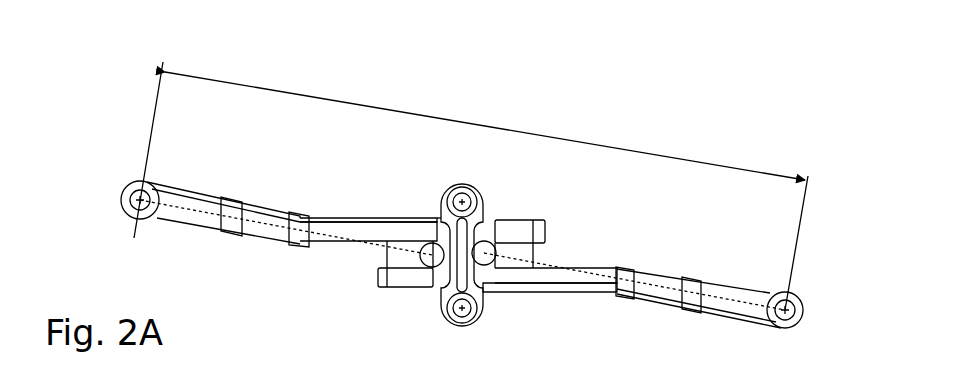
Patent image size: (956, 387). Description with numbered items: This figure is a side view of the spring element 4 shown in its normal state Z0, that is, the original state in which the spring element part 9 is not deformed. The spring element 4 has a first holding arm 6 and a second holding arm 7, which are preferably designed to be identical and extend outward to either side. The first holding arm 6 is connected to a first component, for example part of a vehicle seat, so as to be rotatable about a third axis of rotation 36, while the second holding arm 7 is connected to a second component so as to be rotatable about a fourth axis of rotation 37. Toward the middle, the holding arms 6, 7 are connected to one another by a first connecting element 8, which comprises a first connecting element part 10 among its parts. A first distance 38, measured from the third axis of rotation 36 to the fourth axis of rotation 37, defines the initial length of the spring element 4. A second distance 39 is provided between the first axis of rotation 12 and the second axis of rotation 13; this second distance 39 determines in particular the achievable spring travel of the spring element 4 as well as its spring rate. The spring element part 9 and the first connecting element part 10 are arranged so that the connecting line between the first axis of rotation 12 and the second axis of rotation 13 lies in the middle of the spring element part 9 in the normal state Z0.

The spring element 4 is at (818, 150).
The normal state Z0 is at (551, 75).
The first distance 38 is at (698, 162).
The third axis of rotation 36 is at (135, 215).
The fourth axis of rotation 37 is at (786, 310).
The first holding arm 6 is at (243, 199).
The second holding arm 7 is at (698, 302).
The first connecting element 8 is at (495, 333).
The spring element part 9 is at (533, 257).
The first connecting element part 10 is at (445, 303).
The first axis of rotation 12 is at (462, 181).
The second axis of rotation 13 is at (462, 329).
The second distance 39 is at (440, 216).